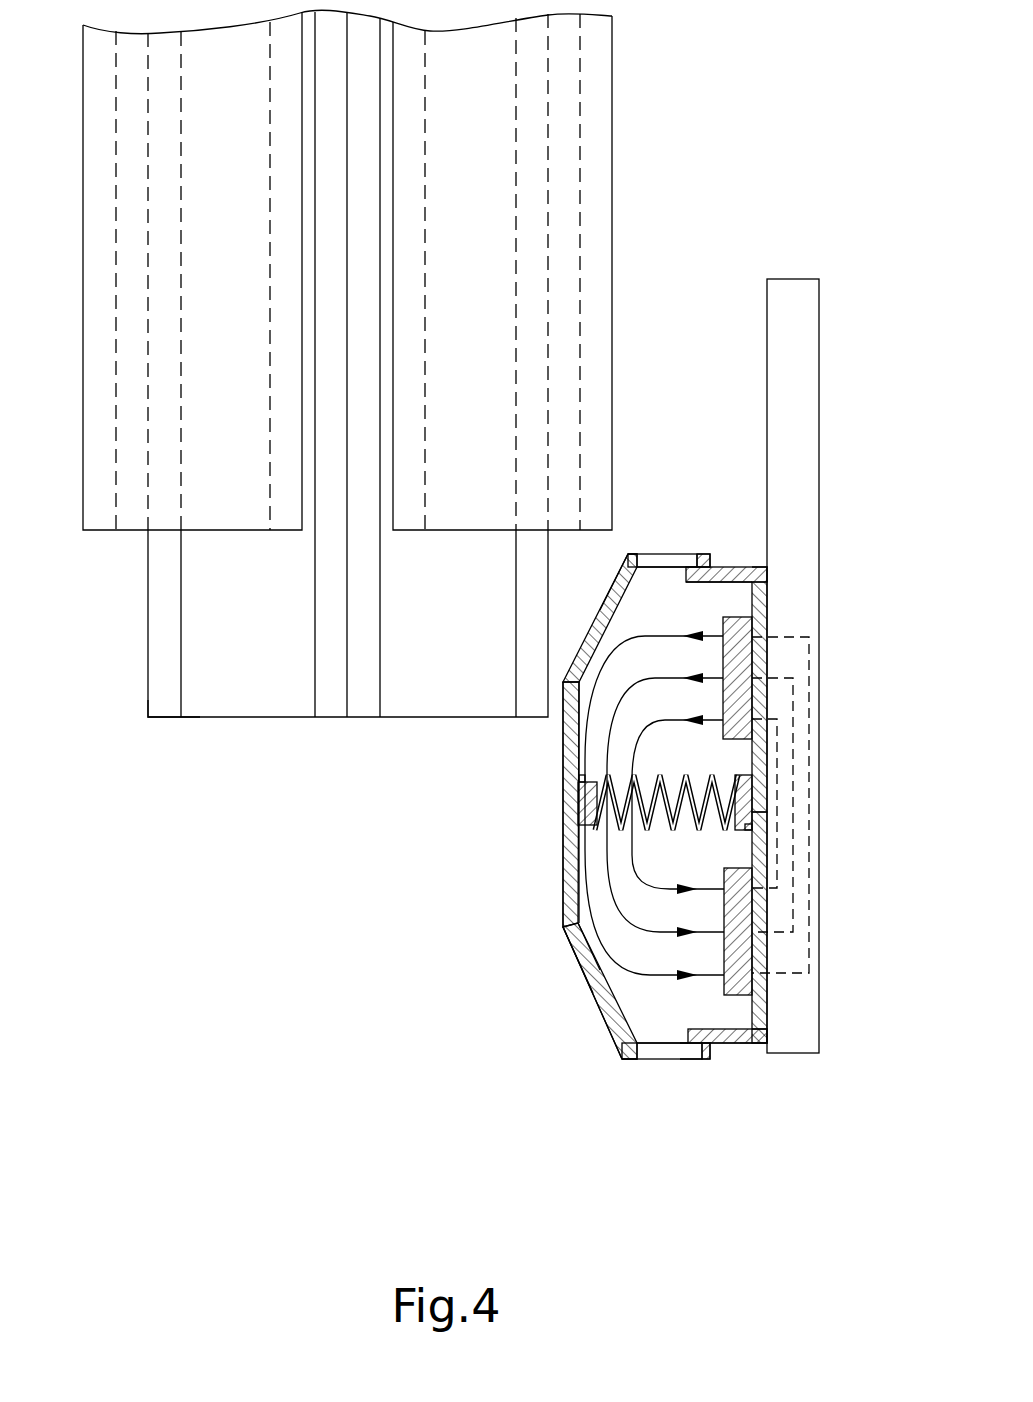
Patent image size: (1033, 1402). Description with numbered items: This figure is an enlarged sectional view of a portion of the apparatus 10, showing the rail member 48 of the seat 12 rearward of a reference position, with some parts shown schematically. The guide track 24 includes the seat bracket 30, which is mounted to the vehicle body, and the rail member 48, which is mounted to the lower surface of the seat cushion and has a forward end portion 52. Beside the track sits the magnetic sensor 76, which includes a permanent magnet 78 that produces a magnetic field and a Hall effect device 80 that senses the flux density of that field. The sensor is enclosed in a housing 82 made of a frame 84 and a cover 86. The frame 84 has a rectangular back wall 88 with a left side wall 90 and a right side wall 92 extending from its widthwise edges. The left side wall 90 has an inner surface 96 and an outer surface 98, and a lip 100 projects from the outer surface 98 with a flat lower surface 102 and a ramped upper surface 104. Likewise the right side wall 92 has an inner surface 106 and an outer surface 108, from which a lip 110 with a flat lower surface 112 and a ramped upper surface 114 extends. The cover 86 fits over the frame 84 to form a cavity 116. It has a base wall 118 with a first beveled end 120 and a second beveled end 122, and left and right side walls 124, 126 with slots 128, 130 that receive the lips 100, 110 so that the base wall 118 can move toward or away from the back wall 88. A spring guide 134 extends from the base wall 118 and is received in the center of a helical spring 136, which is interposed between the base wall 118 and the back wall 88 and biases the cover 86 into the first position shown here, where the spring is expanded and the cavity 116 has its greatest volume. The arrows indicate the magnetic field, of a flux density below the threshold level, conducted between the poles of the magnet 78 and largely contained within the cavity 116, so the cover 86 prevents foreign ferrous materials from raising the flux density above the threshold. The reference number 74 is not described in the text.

The apparatus 10 is at (510, 1045).
The seat 12 is at (180, 755).
The guide track 24 is at (107, 545).
The seat bracket 30 is at (293, 708).
The rail member 48 is at (608, 55).
The forward end portion 52 is at (452, 518).
The plate 74 is at (795, 295).
The magnetic sensor 76 is at (657, 993).
The permanent magnet 78 is at (738, 647).
The Hall effect device 80 is at (740, 958).
The housing 82 is at (557, 973).
The frame 84 is at (762, 604).
The cover 86 is at (625, 553).
The back wall 88 is at (760, 1010).
The left side wall 90 is at (742, 1043).
The right side wall 92 is at (745, 575).
The inner surface 96 is at (727, 1030).
The outer surface 98 is at (720, 1047).
The lip 100 is at (697, 1050).
The flat lower surface 102 is at (710, 1050).
The ramped upper surface 104 is at (658, 1037).
The inner surface 106 is at (728, 582).
The outer surface 108 is at (748, 567).
The lip 110 is at (693, 560).
The flat lower surface 112 is at (710, 555).
The ramped upper surface 114 is at (683, 565).
The cavity 116 is at (703, 866).
The base wall 118 is at (570, 852).
The first beveled end 120 is at (577, 945).
The second beveled end 122 is at (583, 645).
The left side wall 124 is at (630, 1048).
The right side wall 126 is at (618, 558).
The slot 128 is at (650, 1050).
The slot 130 is at (648, 557).
The spring guide 134 is at (575, 793).
The helical spring 136 is at (660, 772).